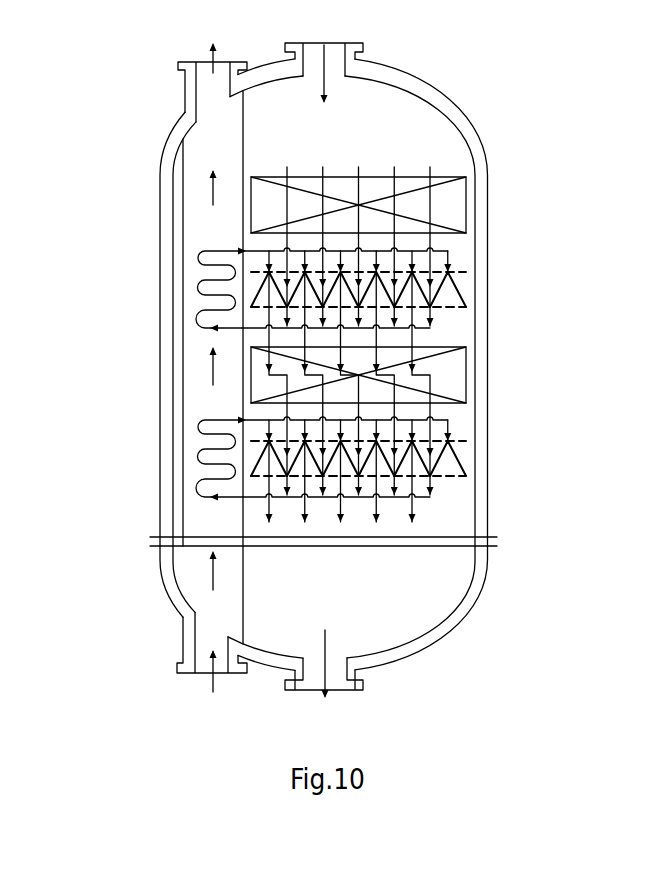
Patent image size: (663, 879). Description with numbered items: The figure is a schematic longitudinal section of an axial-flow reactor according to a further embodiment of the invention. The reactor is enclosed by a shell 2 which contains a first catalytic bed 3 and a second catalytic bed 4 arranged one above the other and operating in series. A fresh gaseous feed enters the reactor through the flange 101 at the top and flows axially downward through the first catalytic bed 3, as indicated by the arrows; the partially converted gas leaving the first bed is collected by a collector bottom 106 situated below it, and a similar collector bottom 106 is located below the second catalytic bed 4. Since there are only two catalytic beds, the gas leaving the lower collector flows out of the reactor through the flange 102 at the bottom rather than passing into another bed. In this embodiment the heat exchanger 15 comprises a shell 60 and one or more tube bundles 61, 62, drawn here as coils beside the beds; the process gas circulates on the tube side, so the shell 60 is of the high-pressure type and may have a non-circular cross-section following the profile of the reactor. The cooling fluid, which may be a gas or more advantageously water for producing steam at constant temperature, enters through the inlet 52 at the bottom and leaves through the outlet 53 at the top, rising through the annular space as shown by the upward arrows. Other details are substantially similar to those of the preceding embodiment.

The heat exchanger 15 is at (140, 515).
The shell 2 is at (445, 112).
The shell 60 is at (183, 352).
The outlet 53 is at (219, 61).
The flange 101 is at (340, 43).
The inlet 52 is at (210, 673).
The flange 102 is at (334, 691).
The first catalytic bed 3 is at (450, 207).
The second catalytic bed 4 is at (450, 374).
The collector bottom 106 is at (440, 295).
The tube bundle 62 is at (200, 291).
The tube bundle 61 is at (200, 457).